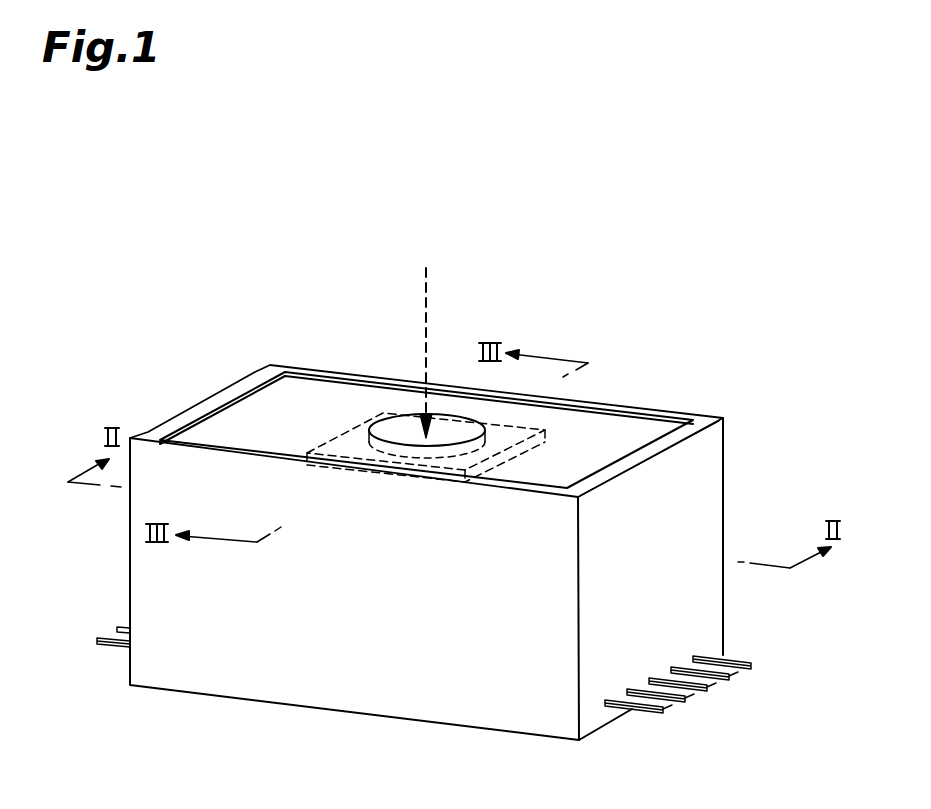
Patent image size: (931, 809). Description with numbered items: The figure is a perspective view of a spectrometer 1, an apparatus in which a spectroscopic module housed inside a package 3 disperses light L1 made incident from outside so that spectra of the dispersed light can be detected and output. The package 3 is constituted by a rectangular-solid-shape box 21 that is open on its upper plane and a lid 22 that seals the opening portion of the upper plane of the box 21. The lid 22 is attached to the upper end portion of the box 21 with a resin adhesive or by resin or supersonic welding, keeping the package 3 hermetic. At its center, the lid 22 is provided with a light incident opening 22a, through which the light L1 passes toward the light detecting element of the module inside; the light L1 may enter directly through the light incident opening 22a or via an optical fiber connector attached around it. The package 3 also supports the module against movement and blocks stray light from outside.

The spectrometer 1 is at (758, 262).
The package 3 is at (119, 547).
The box 21 is at (692, 478).
The lid 22 is at (630, 428).
The light incident opening 22a is at (377, 425).
The light L1 is at (430, 295).